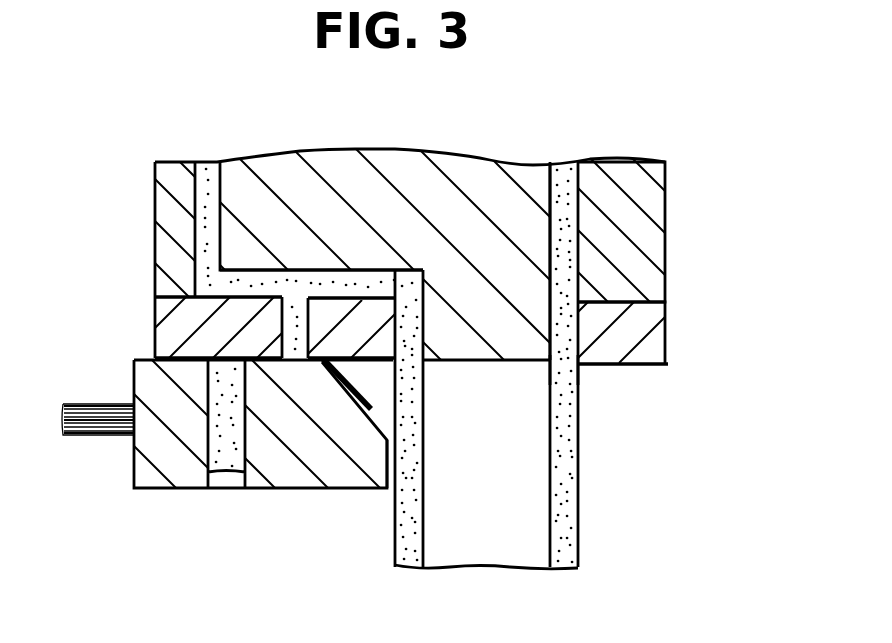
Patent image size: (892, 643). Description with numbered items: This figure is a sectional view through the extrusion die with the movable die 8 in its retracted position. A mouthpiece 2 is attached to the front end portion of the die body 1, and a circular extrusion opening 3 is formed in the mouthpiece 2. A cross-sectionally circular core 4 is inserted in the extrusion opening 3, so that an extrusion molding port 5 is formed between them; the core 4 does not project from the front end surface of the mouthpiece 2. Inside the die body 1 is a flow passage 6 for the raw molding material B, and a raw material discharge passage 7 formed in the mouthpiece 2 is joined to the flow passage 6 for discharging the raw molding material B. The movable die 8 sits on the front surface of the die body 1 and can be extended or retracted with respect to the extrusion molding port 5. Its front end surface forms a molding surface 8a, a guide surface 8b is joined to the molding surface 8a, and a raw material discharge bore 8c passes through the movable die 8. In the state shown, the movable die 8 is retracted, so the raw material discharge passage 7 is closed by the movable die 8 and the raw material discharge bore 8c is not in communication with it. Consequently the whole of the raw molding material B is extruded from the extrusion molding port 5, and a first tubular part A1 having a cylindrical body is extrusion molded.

The die body 1 is at (632, 218).
The mouthpiece 2 is at (640, 325).
The extrusion opening 3 is at (570, 352).
The core 4 is at (475, 345).
The extrusion molding port 5 is at (560, 370).
The flow passage 6 is at (217, 227).
The raw material discharge passage 7 is at (297, 320).
The movable die 8 is at (320, 457).
The molding surface 8a is at (387, 467).
The guide surface 8b is at (363, 407).
The raw material discharge bore 8c is at (207, 463).
The first tubular part A1 is at (563, 540).
The raw molding material B is at (353, 280).